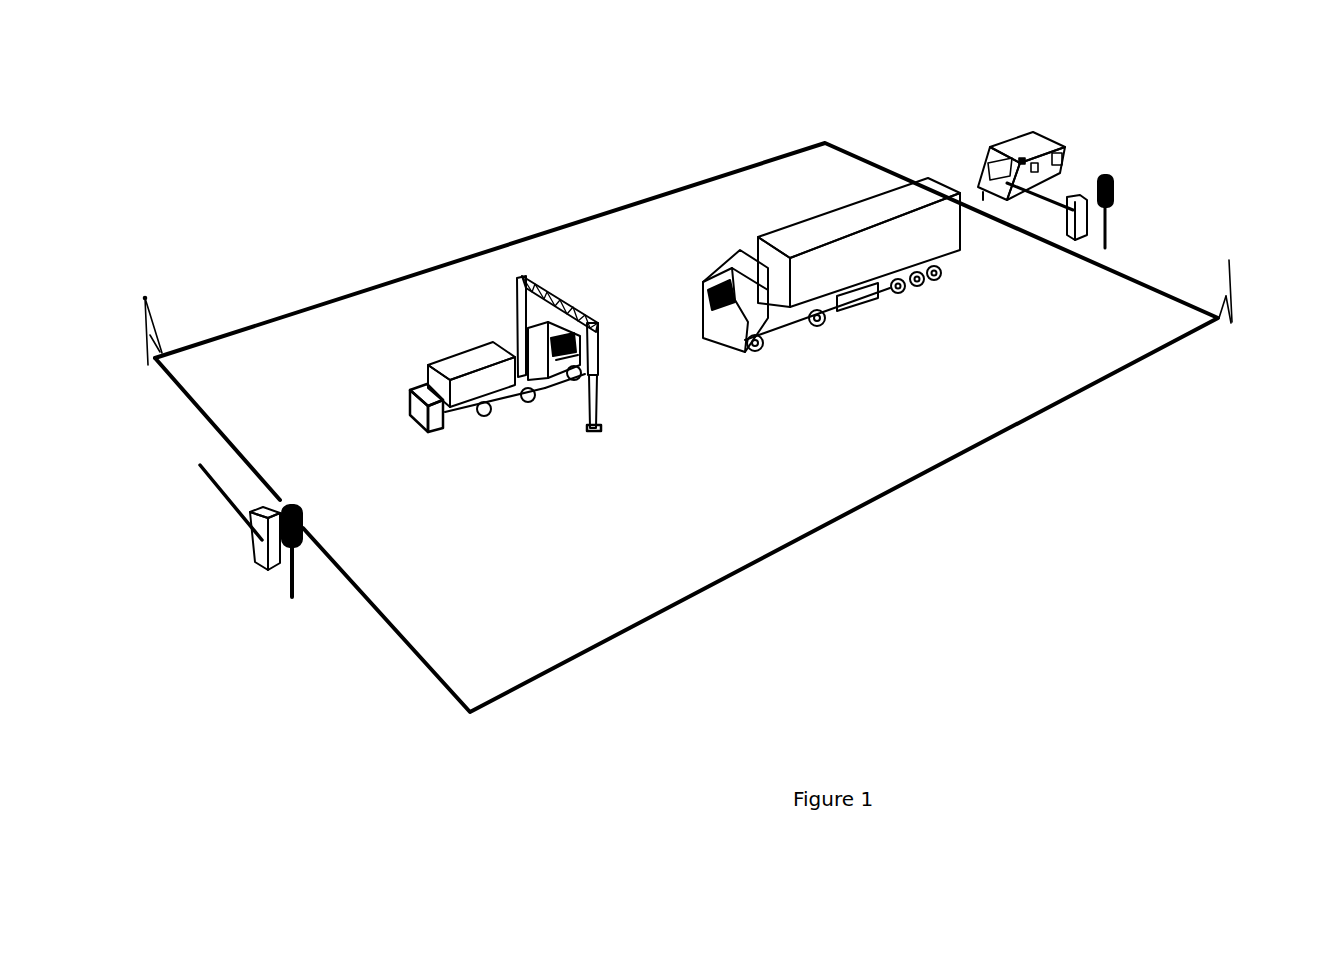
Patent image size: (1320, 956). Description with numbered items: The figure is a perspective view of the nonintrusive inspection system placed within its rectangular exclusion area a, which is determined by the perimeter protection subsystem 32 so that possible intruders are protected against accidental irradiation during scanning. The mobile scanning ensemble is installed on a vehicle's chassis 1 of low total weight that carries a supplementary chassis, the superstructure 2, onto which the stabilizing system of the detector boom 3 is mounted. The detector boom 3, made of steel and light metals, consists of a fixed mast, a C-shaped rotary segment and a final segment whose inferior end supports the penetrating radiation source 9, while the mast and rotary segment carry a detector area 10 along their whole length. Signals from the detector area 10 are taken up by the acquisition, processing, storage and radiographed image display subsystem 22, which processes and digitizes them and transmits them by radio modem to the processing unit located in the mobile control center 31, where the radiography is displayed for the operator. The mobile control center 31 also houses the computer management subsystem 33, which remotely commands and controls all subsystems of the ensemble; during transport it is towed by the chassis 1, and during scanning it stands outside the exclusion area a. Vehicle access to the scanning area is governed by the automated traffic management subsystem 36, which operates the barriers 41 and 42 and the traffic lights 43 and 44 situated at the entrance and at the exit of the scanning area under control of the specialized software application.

The vehicle's chassis 1 is at (488, 415).
The superstructure 2 is at (419, 387).
The detector boom 3 is at (563, 298).
The penetrating radiation source 9 is at (596, 437).
The detector area 10 is at (533, 358).
The acquisition, processing, storage and radiographed image display subsystem 22 is at (1022, 160).
The mobile control center 31 is at (985, 157).
The perimeter protection subsystem 32 is at (148, 298).
The computer management subsystem 33 is at (1038, 142).
The automated traffic management subsystem 36 is at (1063, 157).
The barrier 41 is at (1081, 238).
The barrier 42 is at (265, 572).
The traffic light 43 is at (1115, 187).
The traffic light 44 is at (298, 553).
The exclusion area a is at (502, 649).